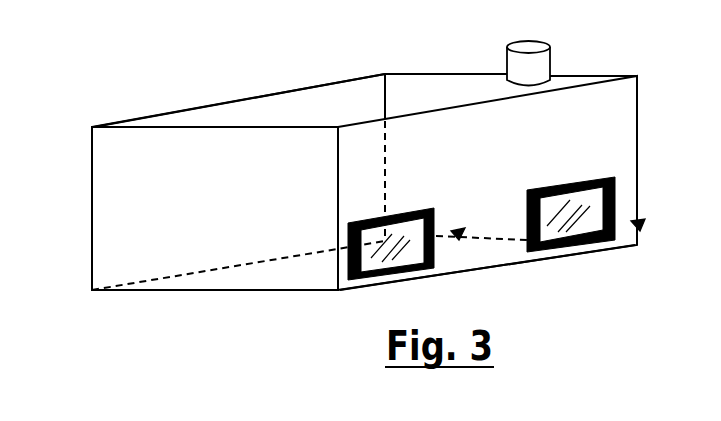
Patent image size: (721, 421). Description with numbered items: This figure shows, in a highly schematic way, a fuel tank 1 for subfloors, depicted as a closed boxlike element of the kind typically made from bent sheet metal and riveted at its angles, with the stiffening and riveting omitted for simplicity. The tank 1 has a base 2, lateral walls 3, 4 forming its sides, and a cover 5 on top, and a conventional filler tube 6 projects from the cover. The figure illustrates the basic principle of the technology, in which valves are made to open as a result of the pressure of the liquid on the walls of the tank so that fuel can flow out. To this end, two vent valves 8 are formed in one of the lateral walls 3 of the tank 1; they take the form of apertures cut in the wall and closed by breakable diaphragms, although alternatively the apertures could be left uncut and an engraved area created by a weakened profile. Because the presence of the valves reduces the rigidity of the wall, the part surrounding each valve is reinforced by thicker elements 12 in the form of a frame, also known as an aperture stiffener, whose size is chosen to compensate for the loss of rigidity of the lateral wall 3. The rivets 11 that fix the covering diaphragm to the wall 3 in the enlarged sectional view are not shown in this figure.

The tank 1 is at (196, 85).
The base 2 is at (205, 290).
The lateral wall 3 is at (590, 252).
The lateral wall 4 is at (92, 210).
The cover 5 is at (340, 84).
The filler tube 6 is at (549, 46).
The vent valve 8 is at (455, 235).
The rivet 11 is at (592, 200).
The thicker element 12 is at (348, 282).